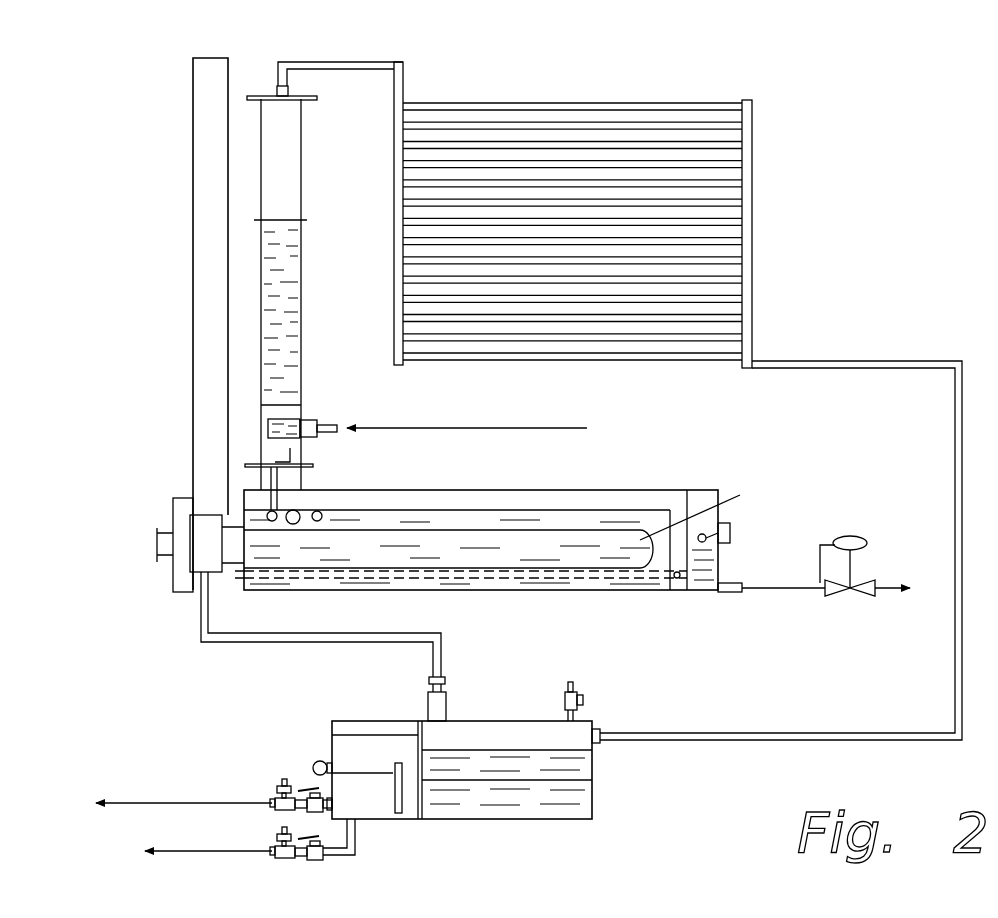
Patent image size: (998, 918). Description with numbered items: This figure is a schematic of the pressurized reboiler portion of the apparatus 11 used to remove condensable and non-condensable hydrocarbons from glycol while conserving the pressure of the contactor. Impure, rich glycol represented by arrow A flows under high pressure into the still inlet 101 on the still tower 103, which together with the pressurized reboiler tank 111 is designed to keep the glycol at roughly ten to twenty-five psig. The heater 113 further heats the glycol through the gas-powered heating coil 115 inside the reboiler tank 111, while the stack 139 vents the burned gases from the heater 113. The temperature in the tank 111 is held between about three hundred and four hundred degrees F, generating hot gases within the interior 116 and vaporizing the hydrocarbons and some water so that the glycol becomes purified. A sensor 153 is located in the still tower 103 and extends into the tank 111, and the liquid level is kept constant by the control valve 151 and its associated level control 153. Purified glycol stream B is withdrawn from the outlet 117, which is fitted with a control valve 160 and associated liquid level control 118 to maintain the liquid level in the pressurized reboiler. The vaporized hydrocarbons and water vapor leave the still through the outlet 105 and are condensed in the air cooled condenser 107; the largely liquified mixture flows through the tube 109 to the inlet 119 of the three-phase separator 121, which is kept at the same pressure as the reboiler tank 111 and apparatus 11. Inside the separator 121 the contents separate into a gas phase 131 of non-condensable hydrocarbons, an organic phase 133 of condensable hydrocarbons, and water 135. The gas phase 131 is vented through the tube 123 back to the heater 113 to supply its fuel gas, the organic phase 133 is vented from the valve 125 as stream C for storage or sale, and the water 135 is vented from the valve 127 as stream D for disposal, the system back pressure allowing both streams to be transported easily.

The apparatus 11 is at (865, 113).
The still inlet 101 is at (318, 422).
The still tower 103 is at (300, 190).
The outlet 105 is at (318, 60).
The air cooled condenser 107 is at (763, 198).
The tube 109 is at (873, 362).
The pressurized reboiler tank 111 is at (645, 492).
The heater 113 is at (177, 582).
The gas-powered heating coil 115 is at (472, 530).
The interior 116 is at (777, 503).
The outlet 117 is at (730, 583).
The liquid level control 118 is at (863, 568).
The inlet 119 is at (598, 728).
The three-phase separator 121 is at (494, 716).
The tube 123 is at (327, 642).
The valve 125 is at (278, 787).
The valve 127 is at (283, 858).
The gas phase 131 is at (570, 745).
The organic phase 133 is at (580, 773).
The water 135 is at (502, 812).
The stack 139 is at (198, 297).
The control valve 151 is at (622, 577).
The sensor 153 is at (311, 469).
The control valve 160 is at (730, 532).